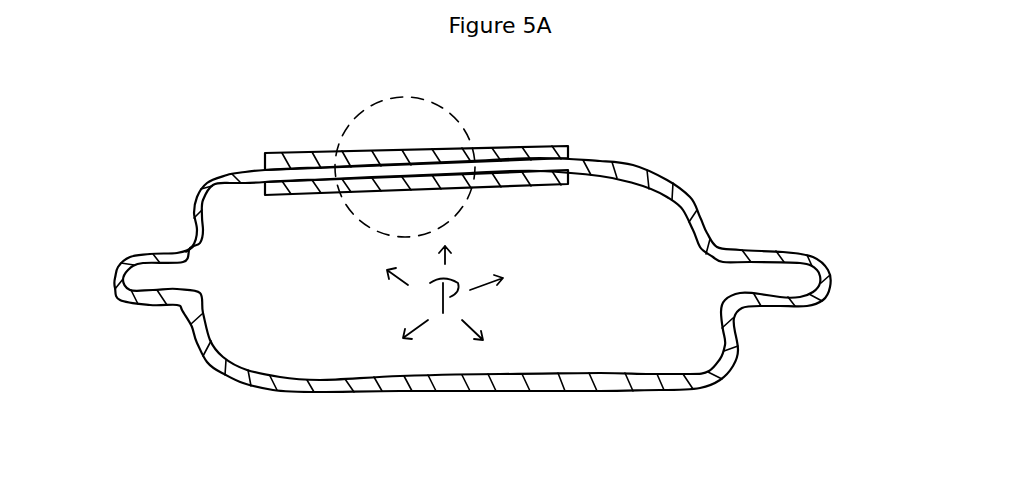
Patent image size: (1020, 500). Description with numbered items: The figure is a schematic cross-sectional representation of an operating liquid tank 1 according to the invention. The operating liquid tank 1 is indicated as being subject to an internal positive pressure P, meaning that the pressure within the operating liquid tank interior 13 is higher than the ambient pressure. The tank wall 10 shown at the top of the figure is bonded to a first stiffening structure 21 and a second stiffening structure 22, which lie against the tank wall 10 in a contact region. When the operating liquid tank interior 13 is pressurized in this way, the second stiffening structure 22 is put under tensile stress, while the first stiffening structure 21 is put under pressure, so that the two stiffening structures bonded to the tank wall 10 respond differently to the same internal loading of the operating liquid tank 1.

The operating liquid tank 1 is at (820, 160).
The tank wall 10 is at (647, 178).
The operating liquid tank interior 13 is at (642, 345).
The first stiffening structure 21 is at (542, 178).
The second stiffening structure 22 is at (541, 150).